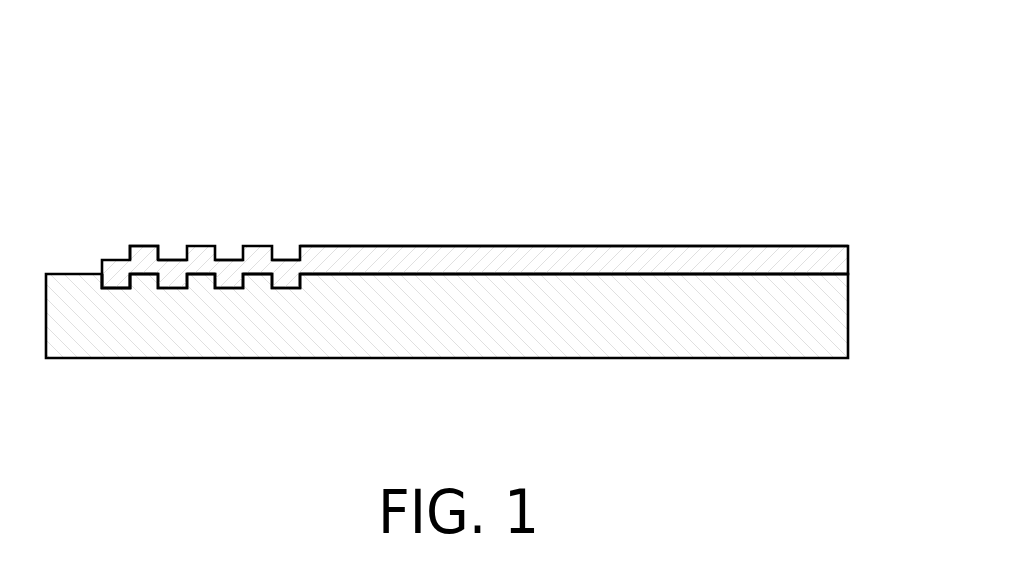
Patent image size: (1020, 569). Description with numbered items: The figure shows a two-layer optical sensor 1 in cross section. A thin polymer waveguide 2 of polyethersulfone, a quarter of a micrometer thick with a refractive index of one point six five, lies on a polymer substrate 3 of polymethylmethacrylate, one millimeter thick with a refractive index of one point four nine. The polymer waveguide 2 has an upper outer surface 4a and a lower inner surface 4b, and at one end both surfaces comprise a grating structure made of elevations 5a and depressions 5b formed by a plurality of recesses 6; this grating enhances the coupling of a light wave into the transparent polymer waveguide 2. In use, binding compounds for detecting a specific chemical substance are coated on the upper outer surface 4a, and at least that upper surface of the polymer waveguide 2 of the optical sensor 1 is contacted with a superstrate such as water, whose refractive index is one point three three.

The optical sensor 1 is at (540, 117).
The polymer waveguide 2 is at (848, 263).
The polymer substrate 3 is at (848, 315).
The upper outer surface 4a is at (338, 246).
The lower inner surface 4b is at (333, 274).
The elevations 5a is at (143, 246).
The depressions 5b is at (118, 288).
The recesses 6 is at (284, 260).